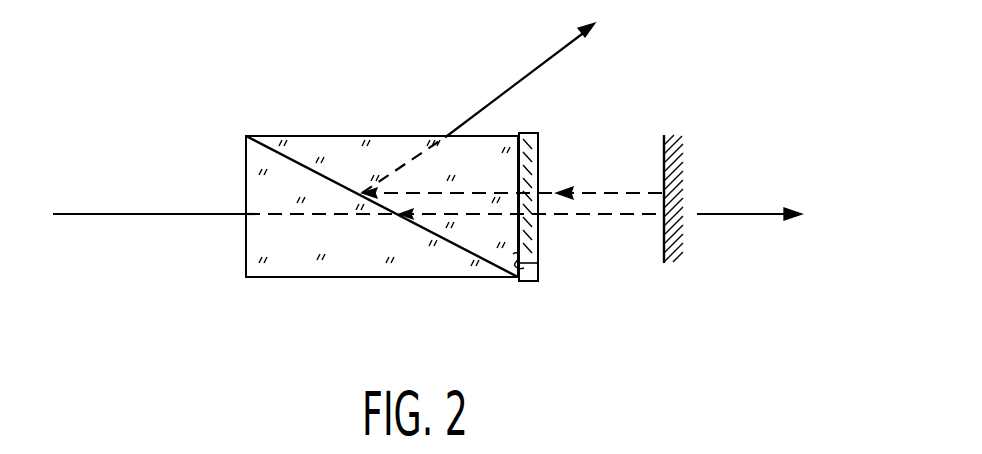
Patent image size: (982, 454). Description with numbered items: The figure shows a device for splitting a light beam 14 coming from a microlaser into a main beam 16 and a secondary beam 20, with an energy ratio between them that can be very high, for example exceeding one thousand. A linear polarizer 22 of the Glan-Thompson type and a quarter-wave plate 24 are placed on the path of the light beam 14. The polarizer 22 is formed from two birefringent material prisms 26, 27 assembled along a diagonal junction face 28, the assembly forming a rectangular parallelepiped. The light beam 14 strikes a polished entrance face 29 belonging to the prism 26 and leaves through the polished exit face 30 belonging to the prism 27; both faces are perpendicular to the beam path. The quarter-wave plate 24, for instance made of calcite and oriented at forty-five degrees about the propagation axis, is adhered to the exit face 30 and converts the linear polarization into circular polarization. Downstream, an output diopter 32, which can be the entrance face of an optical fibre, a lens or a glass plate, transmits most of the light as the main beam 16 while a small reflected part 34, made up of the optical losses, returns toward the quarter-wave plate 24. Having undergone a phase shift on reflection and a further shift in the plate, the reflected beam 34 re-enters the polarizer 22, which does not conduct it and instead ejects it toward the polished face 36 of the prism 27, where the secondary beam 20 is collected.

The light beam 14 is at (123, 213).
The main beam 16 is at (732, 213).
The secondary beam 20 is at (535, 62).
The linear polarizer 22 is at (223, 278).
The quarter-wave plate 24 is at (528, 282).
The birefringent material prism 26 is at (346, 265).
The birefringent material prism 27 is at (400, 146).
The junction face 28 is at (467, 253).
The entrance face 29 is at (243, 160).
The exit face 30 is at (524, 262).
The output diopter 32 is at (712, 207).
The reflected beam 34 is at (630, 158).
The face of the prism 36 is at (297, 135).